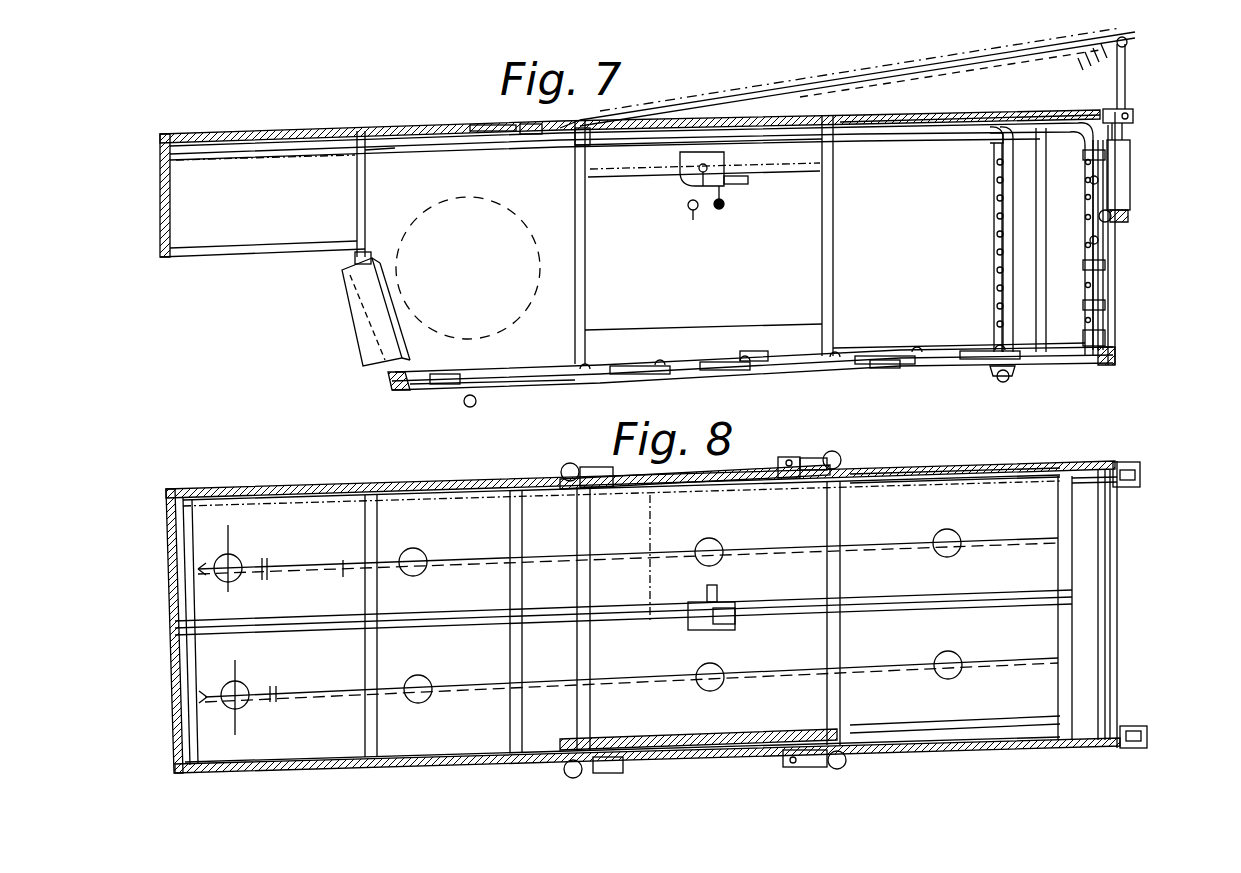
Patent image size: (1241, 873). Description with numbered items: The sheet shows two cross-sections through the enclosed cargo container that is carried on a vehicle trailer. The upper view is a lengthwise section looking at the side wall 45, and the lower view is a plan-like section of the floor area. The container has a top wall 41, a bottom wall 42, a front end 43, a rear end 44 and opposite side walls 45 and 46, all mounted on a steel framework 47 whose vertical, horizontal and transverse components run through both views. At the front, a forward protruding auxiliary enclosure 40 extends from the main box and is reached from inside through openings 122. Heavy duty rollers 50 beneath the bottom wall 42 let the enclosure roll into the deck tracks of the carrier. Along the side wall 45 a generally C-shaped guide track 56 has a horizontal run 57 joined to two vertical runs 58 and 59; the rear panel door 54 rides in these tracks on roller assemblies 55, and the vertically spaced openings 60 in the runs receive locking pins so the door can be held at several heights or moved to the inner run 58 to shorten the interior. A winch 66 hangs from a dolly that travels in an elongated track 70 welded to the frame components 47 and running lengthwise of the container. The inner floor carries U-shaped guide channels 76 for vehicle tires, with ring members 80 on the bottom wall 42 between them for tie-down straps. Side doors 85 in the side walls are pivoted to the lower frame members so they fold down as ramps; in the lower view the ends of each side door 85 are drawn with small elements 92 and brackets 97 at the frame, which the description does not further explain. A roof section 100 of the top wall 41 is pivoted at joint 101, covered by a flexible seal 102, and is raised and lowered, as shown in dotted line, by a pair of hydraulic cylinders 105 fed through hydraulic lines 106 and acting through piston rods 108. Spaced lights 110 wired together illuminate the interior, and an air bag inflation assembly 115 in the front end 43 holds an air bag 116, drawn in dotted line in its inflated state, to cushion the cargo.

In FIG. 7, the auxiliary enclosure 40 is at (258, 182).
In FIG. 7, the top wall 41 is at (425, 125).
In FIG. 7, the bottom wall 42 is at (873, 370).
In FIG. 7, the front end 43 is at (357, 262).
In FIG. 7, the rear end 44 is at (1115, 313).
In FIG. 7, the side wall 45 is at (895, 268).
In FIG. 8, the side wall 45 is at (445, 487).
In FIG. 8, the side wall 46 is at (500, 775).
In FIG. 7, the framework 47 is at (178, 195).
In FIG. 8, the framework 47 is at (180, 522).
In FIG. 7, the rollers 50 is at (466, 390).
In FIG. 7, the rear panel door 54 is at (1103, 283).
In FIG. 7, the roller assemblies 55 is at (1100, 180).
In FIG. 7, the guide tracks 56 is at (1065, 85).
In FIG. 7, the horizontal run 57 is at (958, 92).
In FIG. 7, the vertical run 58 is at (1000, 232).
In FIG. 7, the vertical run 59 is at (1100, 240).
In FIG. 7, the openings 60 is at (1093, 197).
In FIG. 7, the winch 66 is at (688, 185).
In FIG. 8, the winch 66 is at (675, 645).
In FIG. 7, the track 70 is at (773, 150).
In FIG. 8, the track 70 is at (643, 582).
In FIG. 7, the guide channels 76 is at (440, 380).
In FIG. 7, the ring members 80 is at (763, 372).
In FIG. 7, the side doors 85 is at (630, 322).
In FIG. 8, the side doors 85 is at (700, 492).
In FIG. 8, the roller 92 is at (560, 472).
In FIG. 8, the roller bracket 97 is at (605, 478).
In FIG. 7, the roof section 100 is at (862, 66).
In FIG. 7, the pivot joint 101 is at (528, 130).
In FIG. 7, the flexible seal 102 is at (486, 98).
In FIG. 7, the hydraulic cylinders 105 is at (1133, 152).
In FIG. 8, the hydraulic cylinders 105 is at (1128, 480).
In FIG. 7, the hydraulic lines 106 is at (1130, 212).
In FIG. 7, the piston rods 108 is at (1137, 120).
In FIG. 8, the lights 110 is at (430, 682).
In FIG. 7, the air bag inflation assembly 115 is at (370, 337).
In FIG. 7, the air bag 116 is at (462, 195).
In FIG. 7, the openings 122 is at (385, 170).